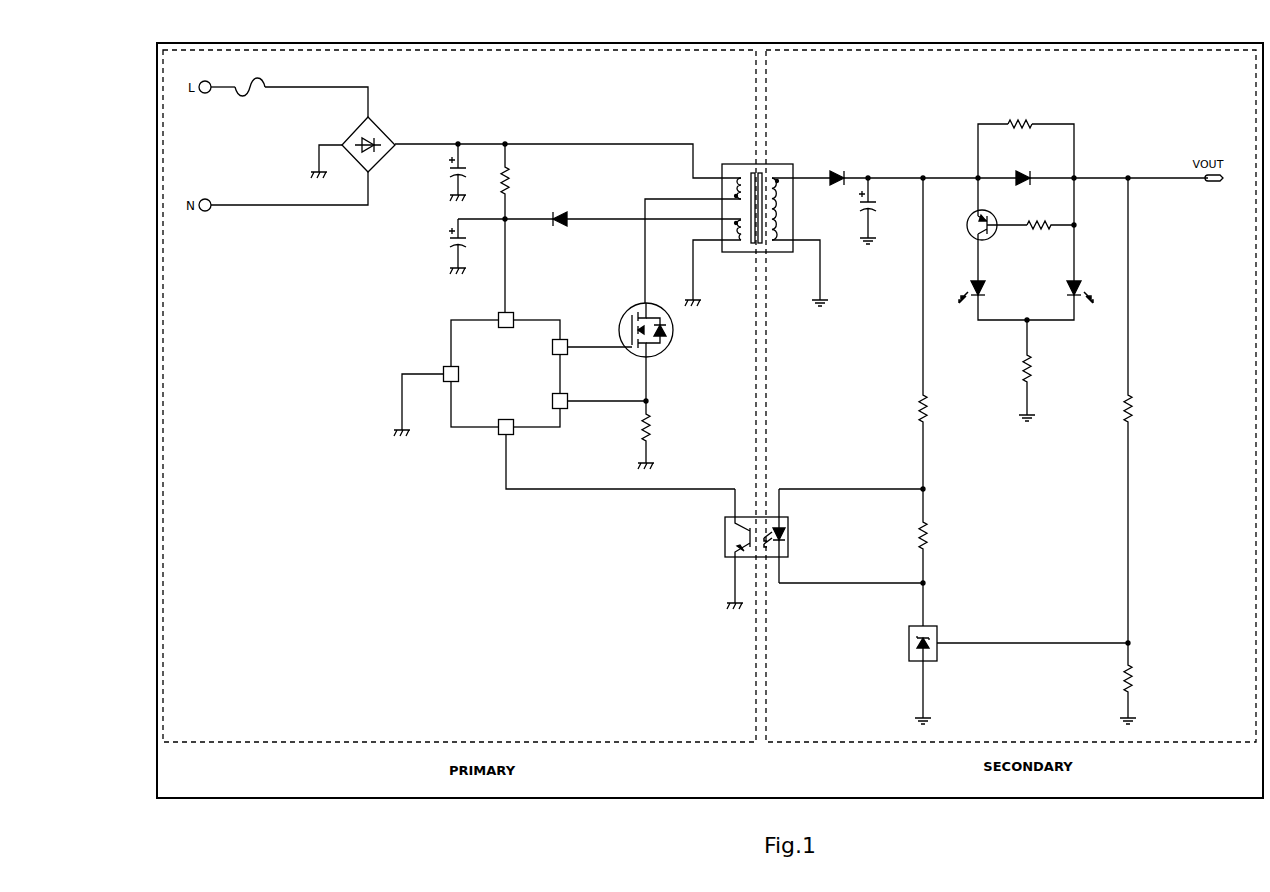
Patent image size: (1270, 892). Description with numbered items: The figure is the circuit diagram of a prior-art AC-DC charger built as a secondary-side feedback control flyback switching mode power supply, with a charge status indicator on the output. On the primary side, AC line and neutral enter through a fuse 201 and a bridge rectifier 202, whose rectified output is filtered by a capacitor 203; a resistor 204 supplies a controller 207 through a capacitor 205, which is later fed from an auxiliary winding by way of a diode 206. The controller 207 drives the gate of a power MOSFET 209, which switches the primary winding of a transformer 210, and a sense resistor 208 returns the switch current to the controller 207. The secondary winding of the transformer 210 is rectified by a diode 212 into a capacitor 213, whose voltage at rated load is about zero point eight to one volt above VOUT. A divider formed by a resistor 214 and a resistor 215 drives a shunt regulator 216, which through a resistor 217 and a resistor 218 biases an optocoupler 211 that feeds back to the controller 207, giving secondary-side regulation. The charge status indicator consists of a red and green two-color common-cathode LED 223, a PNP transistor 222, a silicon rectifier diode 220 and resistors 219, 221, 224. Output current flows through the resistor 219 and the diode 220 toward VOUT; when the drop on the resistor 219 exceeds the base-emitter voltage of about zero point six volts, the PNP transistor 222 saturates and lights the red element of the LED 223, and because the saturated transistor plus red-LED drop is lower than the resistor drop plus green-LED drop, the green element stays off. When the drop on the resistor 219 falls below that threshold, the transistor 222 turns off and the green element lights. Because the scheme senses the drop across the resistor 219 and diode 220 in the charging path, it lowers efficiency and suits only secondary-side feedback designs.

The fuse 201 is at (250, 96).
The bridge rectifier 202 is at (353, 145).
The bulk capacitor 203 is at (443, 172).
The startup resistor 204 is at (520, 181).
The VCC capacitor 205 is at (443, 246).
The auxiliary winding diode 206 is at (553, 229).
The controller IC 207 is at (564, 401).
The current sense resistor 208 is at (660, 435).
The power MOSFET 209 is at (661, 330).
The transformer 210 is at (772, 208).
The optocoupler 211 is at (743, 549).
The output rectifier diode 212 is at (838, 170).
The capacitor 213 is at (883, 211).
The feedback upper resistor 214 is at (909, 333).
The feedback lower resistor 215 is at (908, 536).
The shunt regulator 216 is at (1004, 653).
The resistor 217 is at (1144, 410).
The resistor 218 is at (1116, 683).
The resistor 219 is at (1020, 116).
The silicon rectifier diode 220 is at (1023, 170).
The resistor 221 is at (1050, 217).
The PNP transistor 222 is at (983, 225).
The red and green two-color common-cathode LED 223 is at (1026, 292).
The resistor 224 is at (1040, 370).